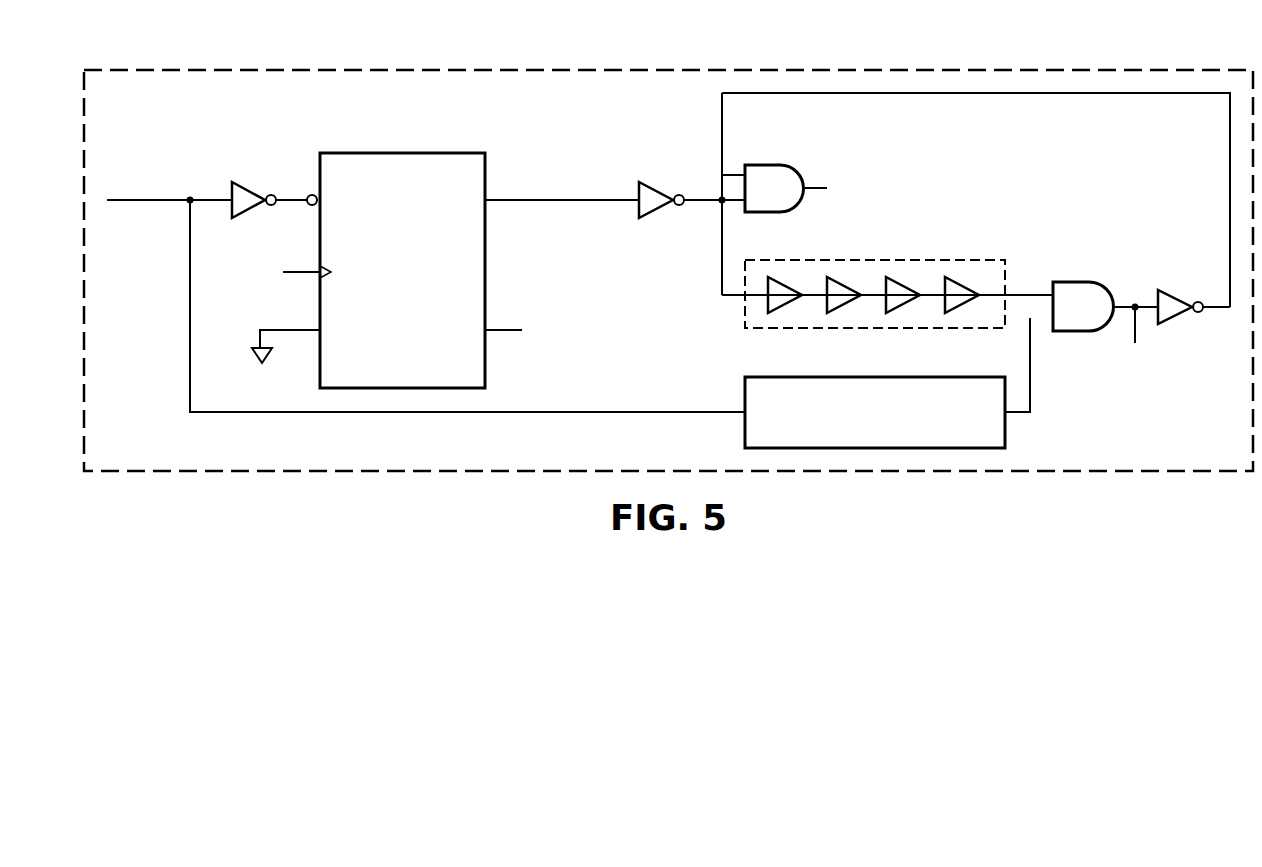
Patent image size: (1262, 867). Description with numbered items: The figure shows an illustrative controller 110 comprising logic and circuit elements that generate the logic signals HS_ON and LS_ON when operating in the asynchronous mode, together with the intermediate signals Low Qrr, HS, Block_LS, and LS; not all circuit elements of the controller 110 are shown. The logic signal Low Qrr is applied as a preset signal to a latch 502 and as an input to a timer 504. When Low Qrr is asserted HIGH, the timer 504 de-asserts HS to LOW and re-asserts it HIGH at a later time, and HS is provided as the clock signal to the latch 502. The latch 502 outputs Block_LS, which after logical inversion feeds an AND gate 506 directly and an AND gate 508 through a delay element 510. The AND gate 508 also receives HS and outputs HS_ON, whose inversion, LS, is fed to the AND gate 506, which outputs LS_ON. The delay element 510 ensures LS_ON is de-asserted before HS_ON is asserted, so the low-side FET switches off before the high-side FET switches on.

The controller 110 is at (251, 60).
The latch 502 is at (403, 152).
The timer 504 is at (745, 405).
The AND gate 506 is at (770, 163).
The AND gate 508 is at (1078, 282).
The delay element 510 is at (955, 250).